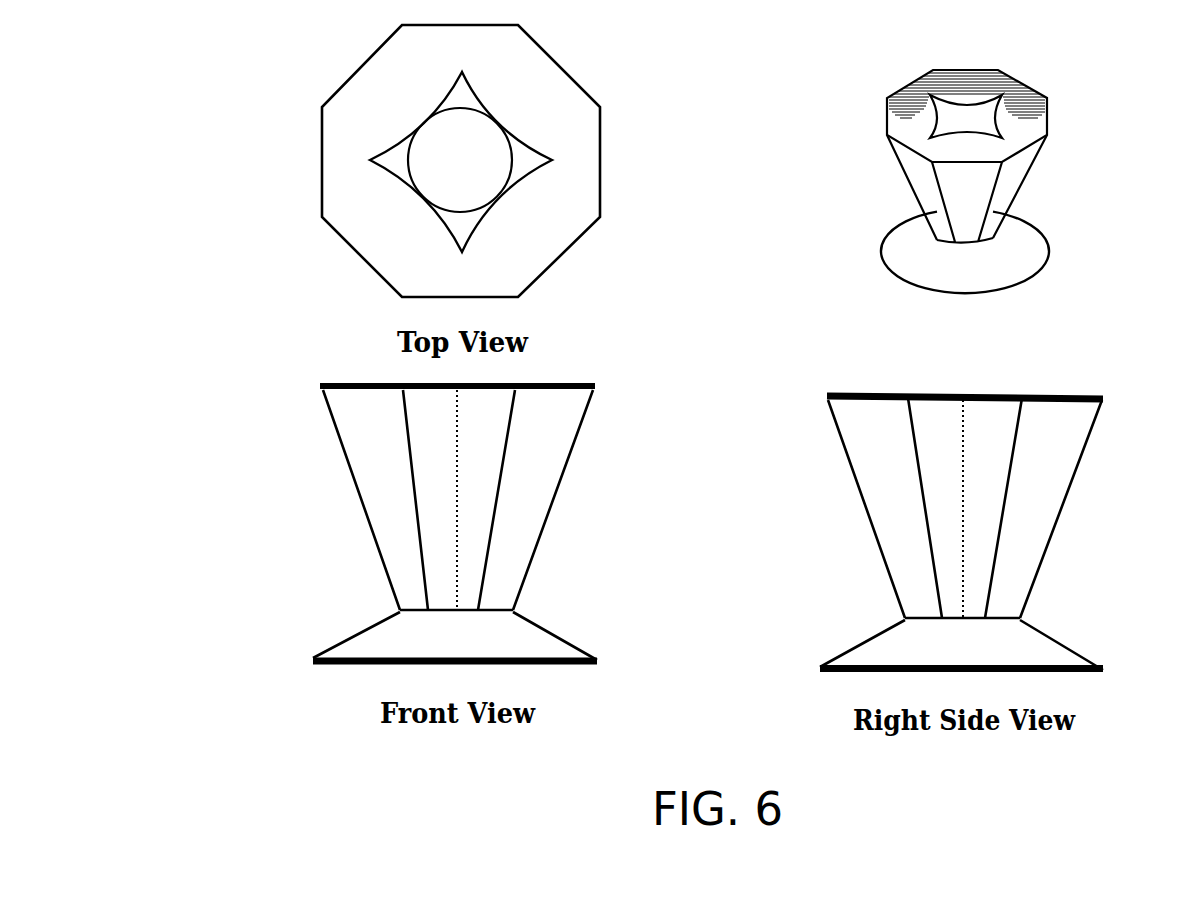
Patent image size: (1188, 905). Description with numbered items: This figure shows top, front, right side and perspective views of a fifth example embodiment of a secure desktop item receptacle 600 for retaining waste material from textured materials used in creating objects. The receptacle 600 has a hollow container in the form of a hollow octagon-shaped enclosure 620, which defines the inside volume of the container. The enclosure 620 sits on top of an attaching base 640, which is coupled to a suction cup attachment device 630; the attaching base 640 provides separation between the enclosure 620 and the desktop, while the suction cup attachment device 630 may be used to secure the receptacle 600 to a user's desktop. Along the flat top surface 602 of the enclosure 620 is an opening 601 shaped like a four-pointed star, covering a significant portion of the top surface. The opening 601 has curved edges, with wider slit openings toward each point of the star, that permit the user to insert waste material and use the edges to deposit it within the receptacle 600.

The secure desktop item receptacle 600 is at (1033, 118).
The opening 601 is at (527, 165).
The flat top surface 602 is at (553, 387).
The hollow octagon-shaped enclosure 620 is at (530, 485).
The suction cup attachment device 630 is at (413, 662).
The attaching base 640 is at (503, 632).